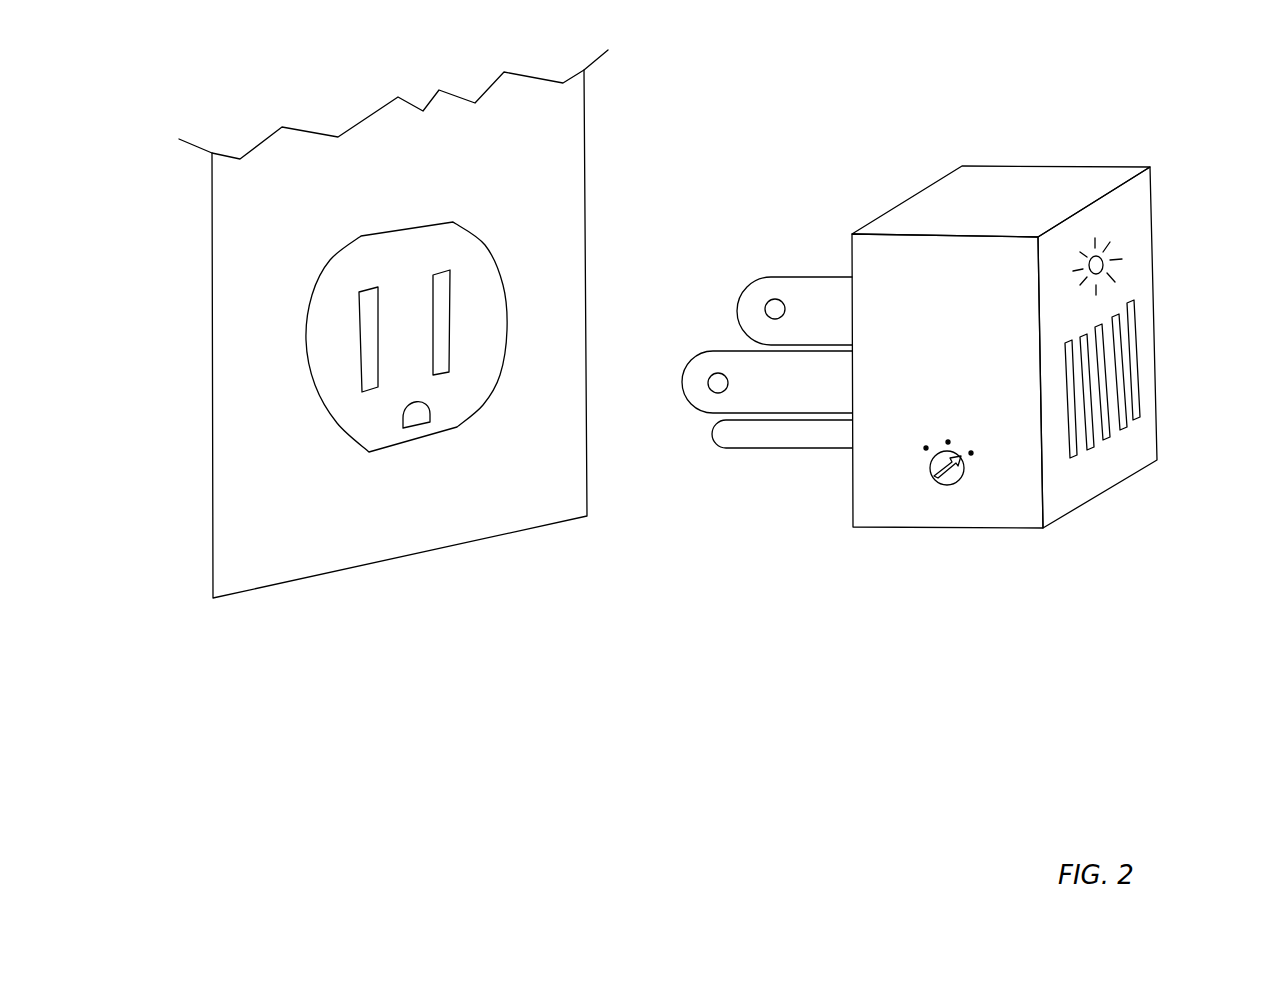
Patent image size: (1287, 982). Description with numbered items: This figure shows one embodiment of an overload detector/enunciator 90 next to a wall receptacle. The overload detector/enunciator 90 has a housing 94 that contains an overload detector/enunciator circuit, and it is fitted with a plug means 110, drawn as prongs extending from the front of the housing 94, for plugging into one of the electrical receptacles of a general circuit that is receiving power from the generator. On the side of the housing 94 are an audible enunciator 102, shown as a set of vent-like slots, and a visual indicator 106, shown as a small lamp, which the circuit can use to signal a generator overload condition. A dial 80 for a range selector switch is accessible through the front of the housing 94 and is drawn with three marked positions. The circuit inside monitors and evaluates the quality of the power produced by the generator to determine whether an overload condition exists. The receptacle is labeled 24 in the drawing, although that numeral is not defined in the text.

The electrical outlet 24 is at (450, 413).
The dial 80 is at (947, 487).
The overload detector/enunciator 90 is at (972, 355).
The housing 94 is at (1057, 167).
The audible enunciator 102 is at (1137, 373).
The visual indicator 106 is at (1103, 262).
The plug means 110 is at (808, 290).